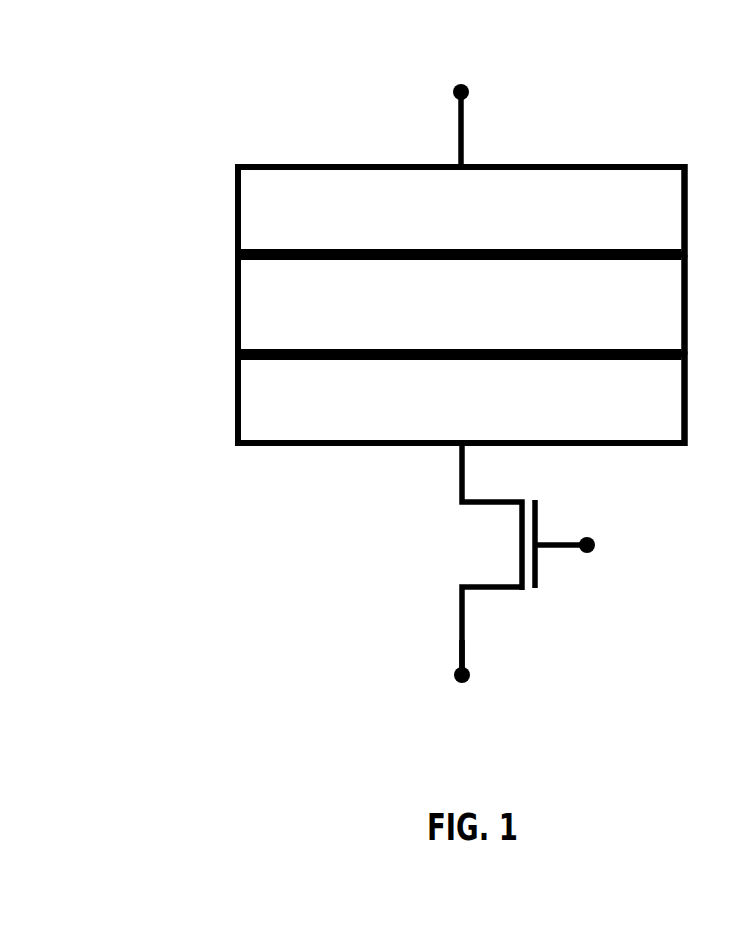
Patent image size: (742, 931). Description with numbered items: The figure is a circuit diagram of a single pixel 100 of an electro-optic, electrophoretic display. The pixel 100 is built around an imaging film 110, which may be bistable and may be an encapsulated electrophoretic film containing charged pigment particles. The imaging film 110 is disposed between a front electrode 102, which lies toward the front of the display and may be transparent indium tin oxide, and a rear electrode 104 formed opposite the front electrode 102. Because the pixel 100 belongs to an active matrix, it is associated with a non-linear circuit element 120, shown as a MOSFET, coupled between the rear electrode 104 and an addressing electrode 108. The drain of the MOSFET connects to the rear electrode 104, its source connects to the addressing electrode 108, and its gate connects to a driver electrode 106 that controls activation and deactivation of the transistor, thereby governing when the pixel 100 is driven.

The pixel 100 is at (103, 63).
The front electrode 102 is at (267, 160).
The imaging film 110 is at (232, 272).
The rear electrode 104 is at (231, 395).
The driver electrode 106 is at (580, 530).
The non-linear circuit element 120 is at (537, 603).
The addressing electrode 108 is at (447, 660).